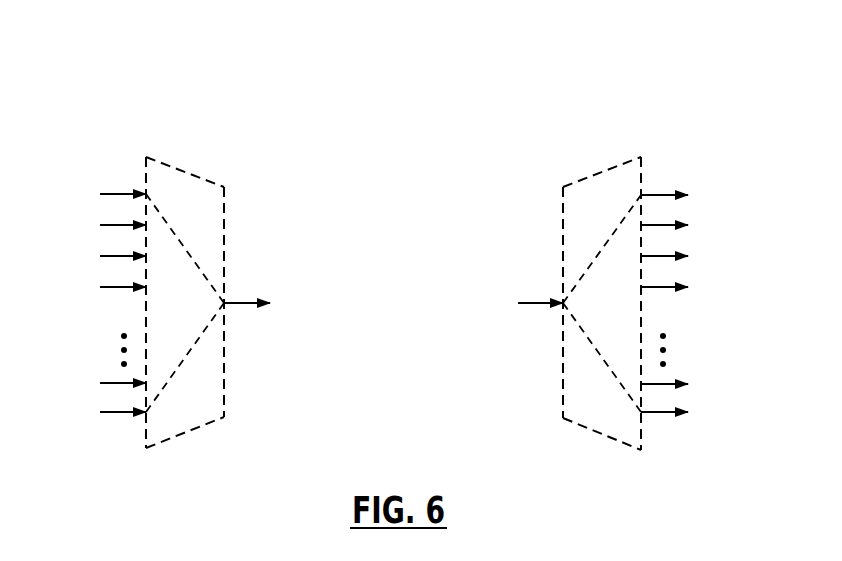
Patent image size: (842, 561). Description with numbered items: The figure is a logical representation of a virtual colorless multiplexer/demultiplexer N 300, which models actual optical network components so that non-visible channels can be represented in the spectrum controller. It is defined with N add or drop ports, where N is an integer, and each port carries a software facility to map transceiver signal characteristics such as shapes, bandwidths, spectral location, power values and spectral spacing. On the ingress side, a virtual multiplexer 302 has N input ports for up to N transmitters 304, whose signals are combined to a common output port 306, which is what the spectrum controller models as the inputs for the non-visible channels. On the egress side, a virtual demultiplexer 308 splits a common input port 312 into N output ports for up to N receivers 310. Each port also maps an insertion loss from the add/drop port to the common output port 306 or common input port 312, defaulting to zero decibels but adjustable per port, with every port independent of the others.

The virtual colorless multiplexer/demultiplexer N 300 is at (435, 90).
The virtual multiplexer 302 is at (200, 177).
The transmitters 304 is at (72, 152).
The common output port 306 is at (285, 272).
The virtual demultiplexer 308 is at (608, 170).
The receivers 310 is at (700, 152).
The common input port 312 is at (455, 272).